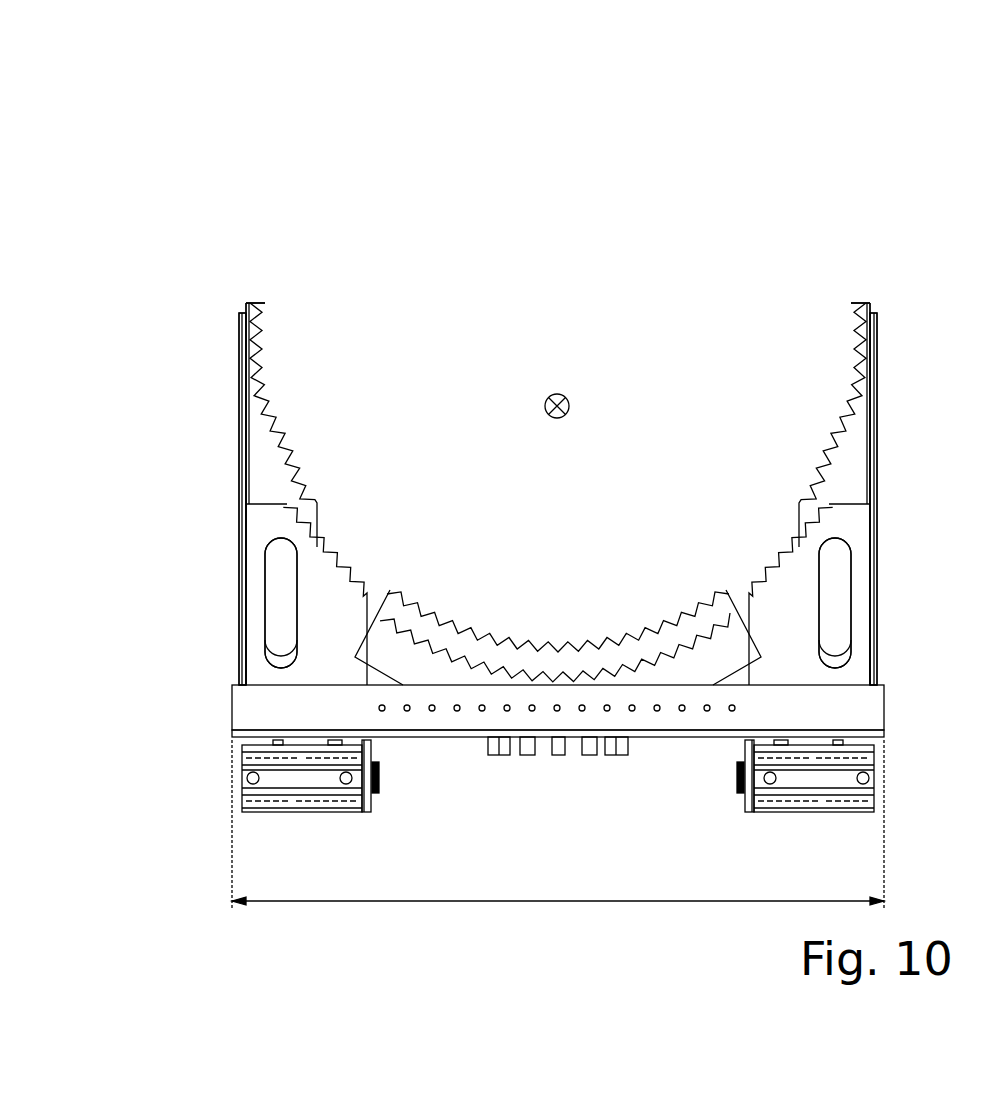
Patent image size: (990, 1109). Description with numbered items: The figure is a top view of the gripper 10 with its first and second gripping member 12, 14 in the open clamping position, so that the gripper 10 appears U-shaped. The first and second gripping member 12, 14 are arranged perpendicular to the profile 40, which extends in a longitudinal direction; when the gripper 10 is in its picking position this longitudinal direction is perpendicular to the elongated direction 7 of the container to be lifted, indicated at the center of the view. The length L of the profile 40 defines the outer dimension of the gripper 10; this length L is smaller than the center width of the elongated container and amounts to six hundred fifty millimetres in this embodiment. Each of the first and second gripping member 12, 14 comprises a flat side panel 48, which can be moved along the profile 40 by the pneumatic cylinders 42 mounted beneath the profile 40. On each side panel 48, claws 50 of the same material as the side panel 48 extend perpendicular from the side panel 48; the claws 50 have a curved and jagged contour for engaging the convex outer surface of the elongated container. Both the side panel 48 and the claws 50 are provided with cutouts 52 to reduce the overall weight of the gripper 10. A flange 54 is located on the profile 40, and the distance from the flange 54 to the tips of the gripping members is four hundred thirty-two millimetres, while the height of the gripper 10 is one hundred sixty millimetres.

The gripper 10 is at (360, 165).
The elongated direction 7 is at (570, 404).
The first gripping member 12 is at (220, 491).
The second gripping member 14 is at (896, 491).
The profile 40 is at (435, 720).
The pneumatic cylinders 42 is at (290, 778).
The flat side panel 48 is at (238, 373).
The claws 50 is at (258, 455).
The cutouts 52 is at (838, 585).
The flange 54 is at (558, 757).
The length of the profile L is at (575, 903).